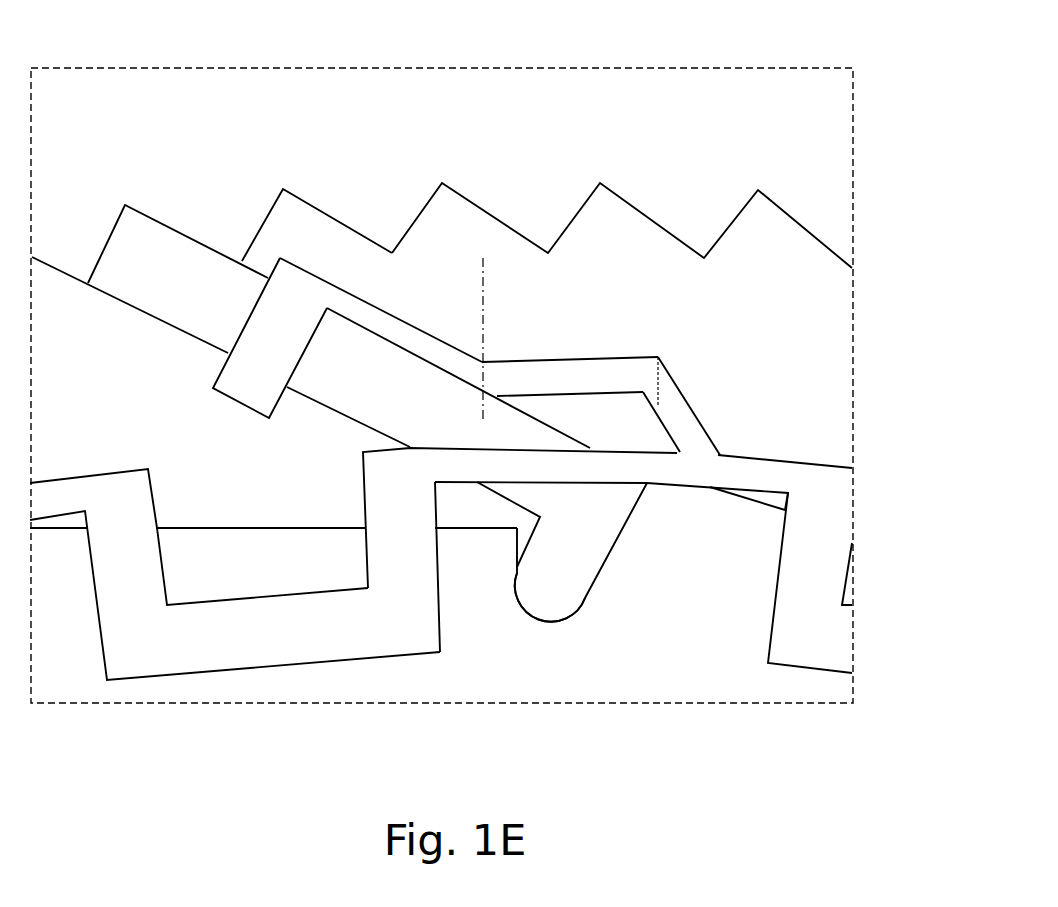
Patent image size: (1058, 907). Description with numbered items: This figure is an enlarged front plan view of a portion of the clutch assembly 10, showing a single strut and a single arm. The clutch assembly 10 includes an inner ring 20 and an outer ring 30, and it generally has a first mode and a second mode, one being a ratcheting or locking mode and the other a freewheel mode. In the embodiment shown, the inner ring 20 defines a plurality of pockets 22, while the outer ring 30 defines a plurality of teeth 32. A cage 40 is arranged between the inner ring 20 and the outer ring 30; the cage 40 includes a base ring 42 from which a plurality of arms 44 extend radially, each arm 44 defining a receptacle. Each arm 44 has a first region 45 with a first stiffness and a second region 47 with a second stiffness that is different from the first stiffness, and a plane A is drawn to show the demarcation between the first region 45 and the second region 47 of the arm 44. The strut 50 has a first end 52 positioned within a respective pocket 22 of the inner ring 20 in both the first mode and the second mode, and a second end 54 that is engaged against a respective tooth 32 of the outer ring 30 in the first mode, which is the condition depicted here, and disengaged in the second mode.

The clutch assembly 10 is at (793, 105).
The inner ring 20 is at (664, 622).
The pocket 22 is at (580, 604).
The outer ring 30 is at (617, 158).
The tooth 32 is at (113, 225).
The cage 40 is at (812, 522).
The base ring 42 is at (647, 483).
The arm 44 is at (680, 405).
The first region 45 is at (633, 366).
The second region 47 is at (414, 337).
The strut 50 is at (333, 357).
The first end 52 is at (543, 585).
The second end 54 is at (202, 280).
The plane A is at (483, 307).